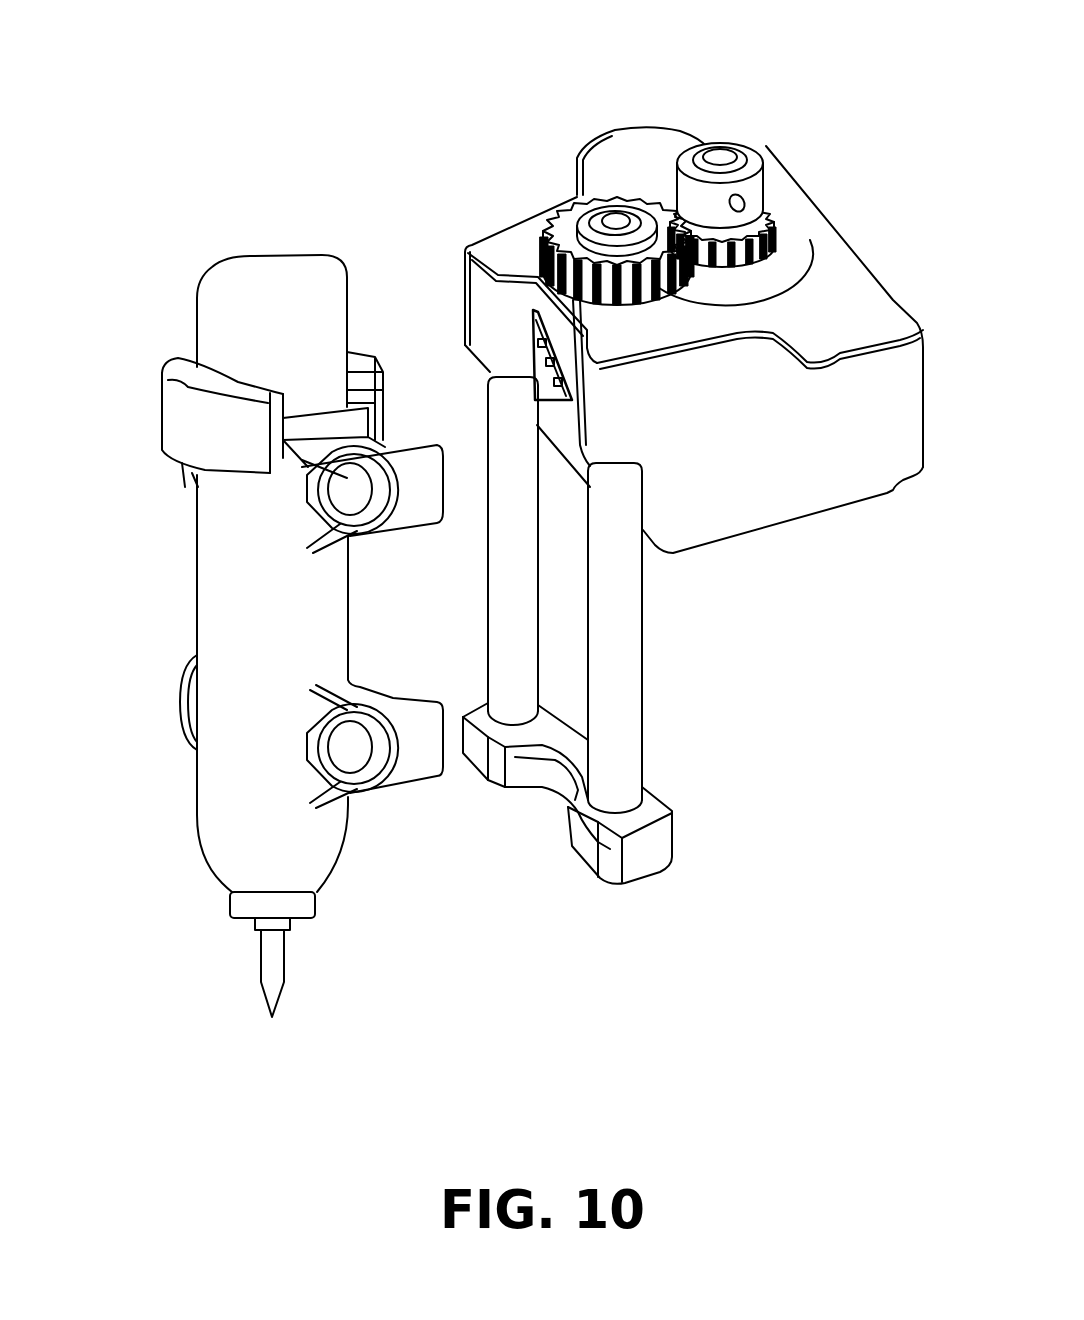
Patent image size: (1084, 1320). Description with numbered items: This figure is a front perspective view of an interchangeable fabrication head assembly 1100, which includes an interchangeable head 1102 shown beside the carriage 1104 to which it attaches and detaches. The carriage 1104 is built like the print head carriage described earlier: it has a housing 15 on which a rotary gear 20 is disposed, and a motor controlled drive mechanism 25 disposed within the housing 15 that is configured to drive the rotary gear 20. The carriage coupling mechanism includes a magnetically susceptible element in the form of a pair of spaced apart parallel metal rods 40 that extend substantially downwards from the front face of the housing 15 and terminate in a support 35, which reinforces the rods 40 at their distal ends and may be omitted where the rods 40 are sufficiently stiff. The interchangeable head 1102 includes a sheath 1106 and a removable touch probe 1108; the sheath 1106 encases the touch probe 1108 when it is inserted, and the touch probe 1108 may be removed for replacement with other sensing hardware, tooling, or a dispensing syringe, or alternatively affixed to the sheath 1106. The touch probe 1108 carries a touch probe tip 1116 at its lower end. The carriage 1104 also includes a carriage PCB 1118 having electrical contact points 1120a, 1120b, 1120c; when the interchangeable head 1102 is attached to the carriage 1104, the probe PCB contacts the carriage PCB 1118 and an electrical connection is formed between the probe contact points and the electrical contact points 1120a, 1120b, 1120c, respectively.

The interchangeable fabrication head assembly 1100 is at (239, 42).
The interchangeable head 1102 is at (178, 212).
The carriage 1104 is at (590, 122).
The sheath 1106 is at (197, 565).
The touch probe 1108 is at (240, 320).
The touch probe tip 1116 is at (272, 963).
The carriage PCB 1118 is at (532, 325).
The electrical contact point 1120a is at (538, 347).
The electrical contact point 1120b is at (548, 365).
The electrical contact point 1120c is at (556, 387).
The housing 15 is at (833, 470).
The rotary gear 20 is at (553, 222).
The motor controlled drive mechanism 25 is at (714, 152).
The metal rods 40 is at (507, 617).
The support 35 is at (636, 853).